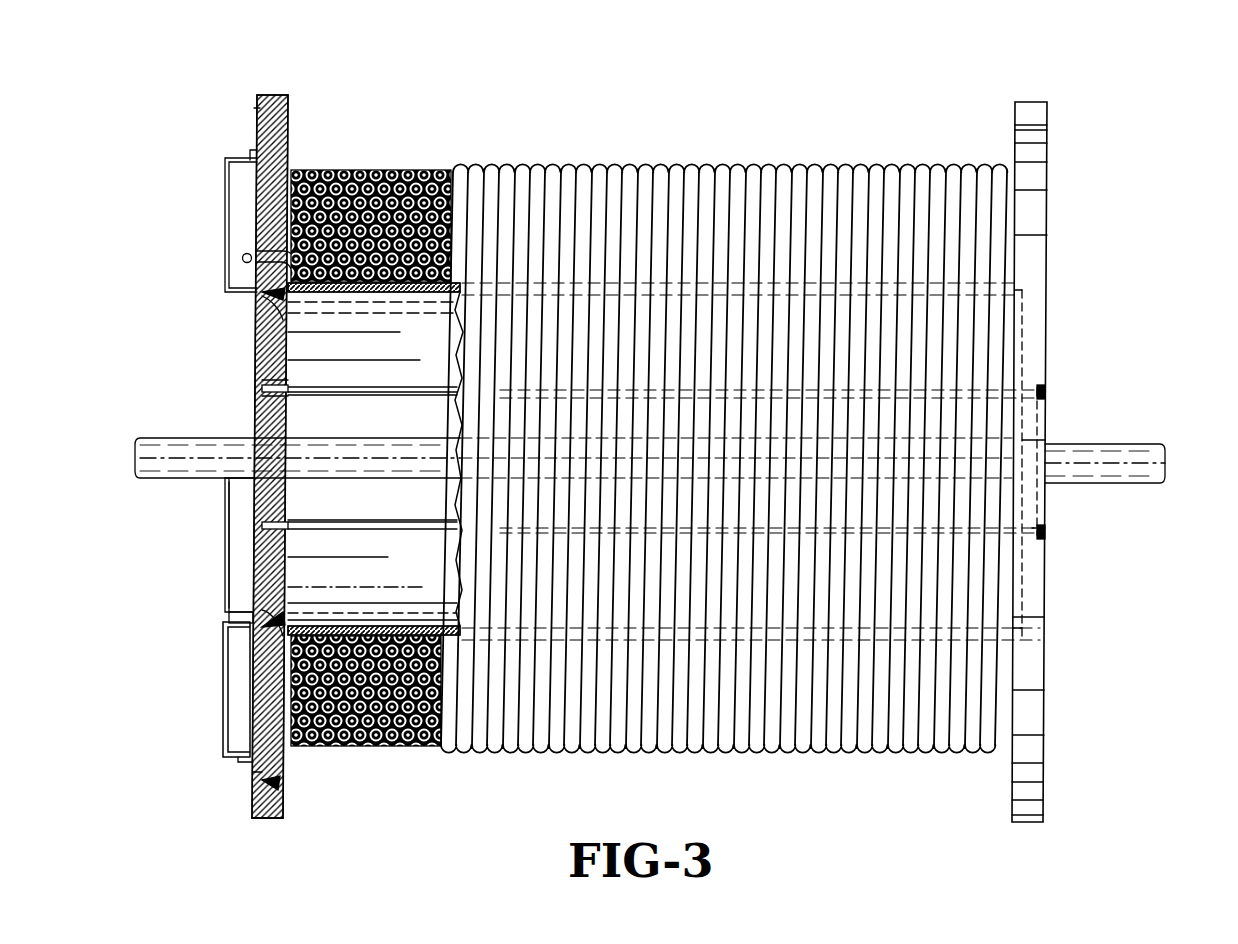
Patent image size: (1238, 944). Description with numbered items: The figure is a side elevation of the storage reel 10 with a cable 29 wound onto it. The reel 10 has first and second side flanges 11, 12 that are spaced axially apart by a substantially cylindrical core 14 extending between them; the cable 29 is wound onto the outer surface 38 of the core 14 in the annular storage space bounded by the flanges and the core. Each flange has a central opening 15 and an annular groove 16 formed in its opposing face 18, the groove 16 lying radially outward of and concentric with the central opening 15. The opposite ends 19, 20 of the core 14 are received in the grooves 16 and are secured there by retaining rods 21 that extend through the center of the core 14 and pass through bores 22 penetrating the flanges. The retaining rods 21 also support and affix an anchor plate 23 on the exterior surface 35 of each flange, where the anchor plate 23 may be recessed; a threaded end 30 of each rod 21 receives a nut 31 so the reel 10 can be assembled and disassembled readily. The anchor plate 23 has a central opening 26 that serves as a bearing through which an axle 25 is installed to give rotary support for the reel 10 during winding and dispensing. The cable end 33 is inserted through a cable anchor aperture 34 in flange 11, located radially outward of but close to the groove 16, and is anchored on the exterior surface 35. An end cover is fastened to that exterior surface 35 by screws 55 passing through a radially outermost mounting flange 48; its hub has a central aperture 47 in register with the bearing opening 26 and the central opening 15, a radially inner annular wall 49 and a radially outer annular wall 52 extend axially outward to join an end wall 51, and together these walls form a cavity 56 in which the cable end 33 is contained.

The storage reel 10 is at (1076, 318).
The first side flange 11 is at (296, 86).
The second side flange 12 is at (1016, 96).
The core 14 is at (345, 298).
The central opening 15 is at (275, 442).
The annular groove 16 is at (270, 640).
The opposing face 18 is at (287, 152).
The core end 19 is at (242, 622).
The core end 20 is at (1022, 635).
The retaining rod 21 is at (428, 394).
The bore 22 is at (290, 392).
The anchor plate 23 is at (262, 386).
The axle 25 is at (1162, 460).
The central opening 26 is at (240, 482).
The cable 29 is at (385, 750).
The threaded end 30 is at (1045, 393).
The nut 31 is at (1045, 535).
The cable end 33 is at (243, 258).
The cable anchor aperture 34 is at (262, 247).
The exterior surface 35 is at (256, 108).
The outer surface 38 is at (578, 282).
The central aperture 47 is at (253, 490).
The mounting flange 48 is at (276, 782).
The radially inner annular wall 49 is at (240, 560).
The end wall 51 is at (238, 700).
The radially outer annular wall 52 is at (245, 758).
The screw 55 is at (262, 775).
The cavity 56 is at (242, 186).